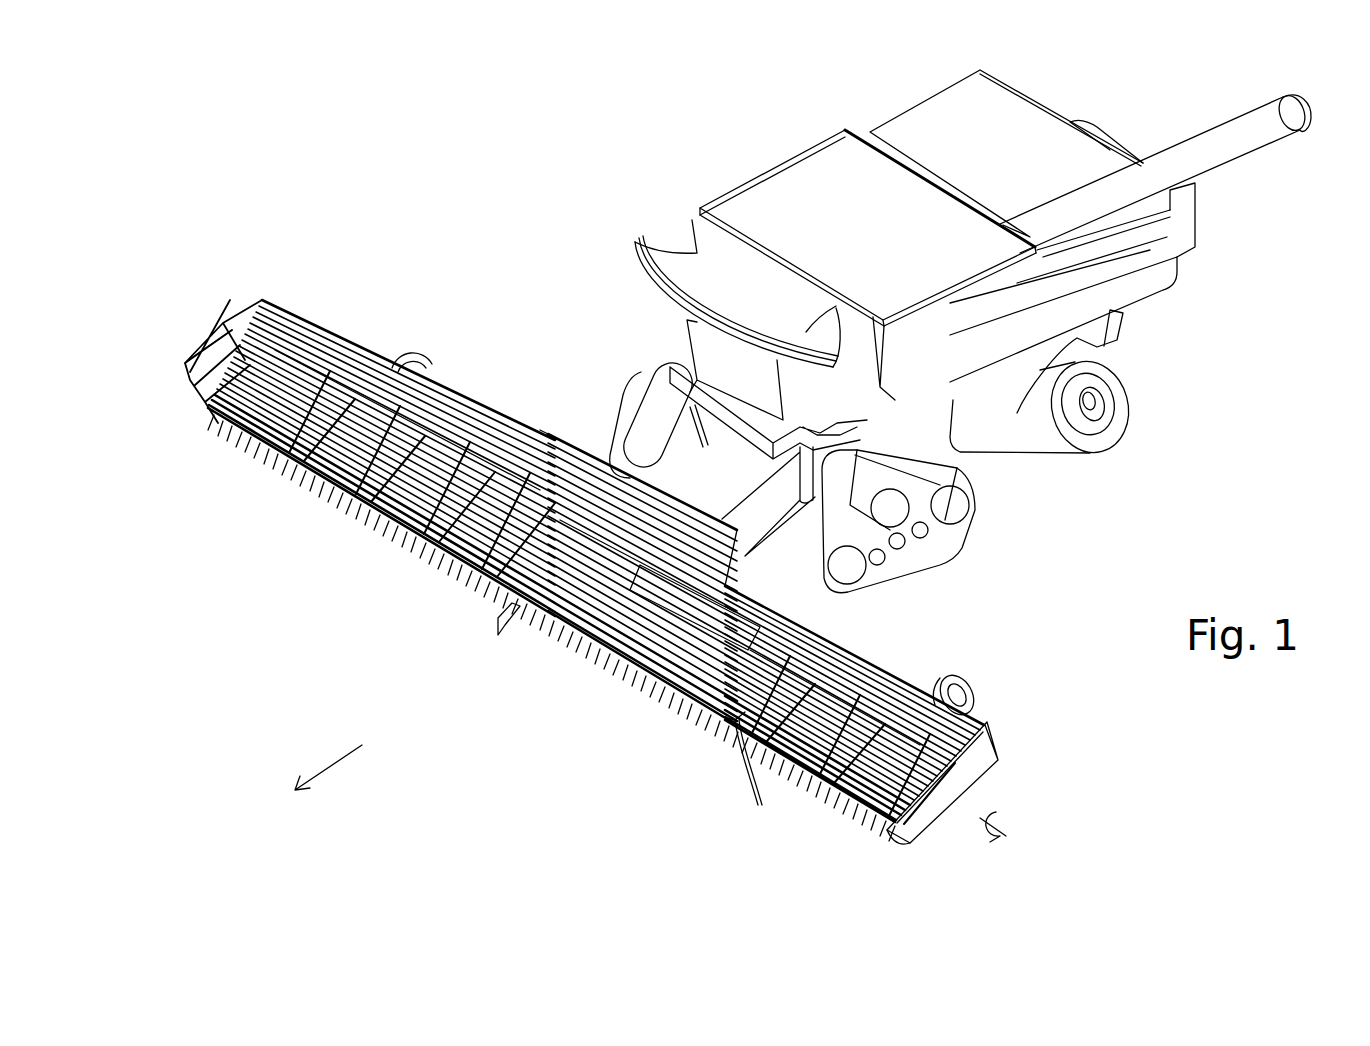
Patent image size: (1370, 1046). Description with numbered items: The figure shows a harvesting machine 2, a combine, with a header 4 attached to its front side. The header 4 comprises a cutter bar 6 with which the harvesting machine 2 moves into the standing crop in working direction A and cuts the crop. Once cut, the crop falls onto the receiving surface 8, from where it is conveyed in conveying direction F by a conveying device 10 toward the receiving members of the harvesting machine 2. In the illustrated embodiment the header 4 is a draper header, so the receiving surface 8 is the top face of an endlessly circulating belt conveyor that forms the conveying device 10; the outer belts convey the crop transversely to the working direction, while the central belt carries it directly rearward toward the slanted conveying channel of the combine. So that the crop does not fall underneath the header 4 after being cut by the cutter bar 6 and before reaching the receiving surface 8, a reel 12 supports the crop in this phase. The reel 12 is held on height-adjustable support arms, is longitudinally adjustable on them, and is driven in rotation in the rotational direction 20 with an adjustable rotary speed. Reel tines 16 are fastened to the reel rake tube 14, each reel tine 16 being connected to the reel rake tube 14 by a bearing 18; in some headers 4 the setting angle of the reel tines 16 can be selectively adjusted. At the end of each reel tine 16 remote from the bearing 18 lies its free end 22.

The harvesting machine 2 is at (781, 86).
The header 4 is at (382, 259).
The cutter bar 6 is at (352, 537).
The receiving surface 8 is at (425, 410).
The conveying device 10 is at (243, 437).
The reel 12 is at (810, 663).
The reel rake tube 14 is at (463, 580).
The reel tine 16 is at (317, 480).
The bearing 18 is at (755, 780).
The rotational direction 20 is at (1010, 822).
The free end 22 is at (496, 638).